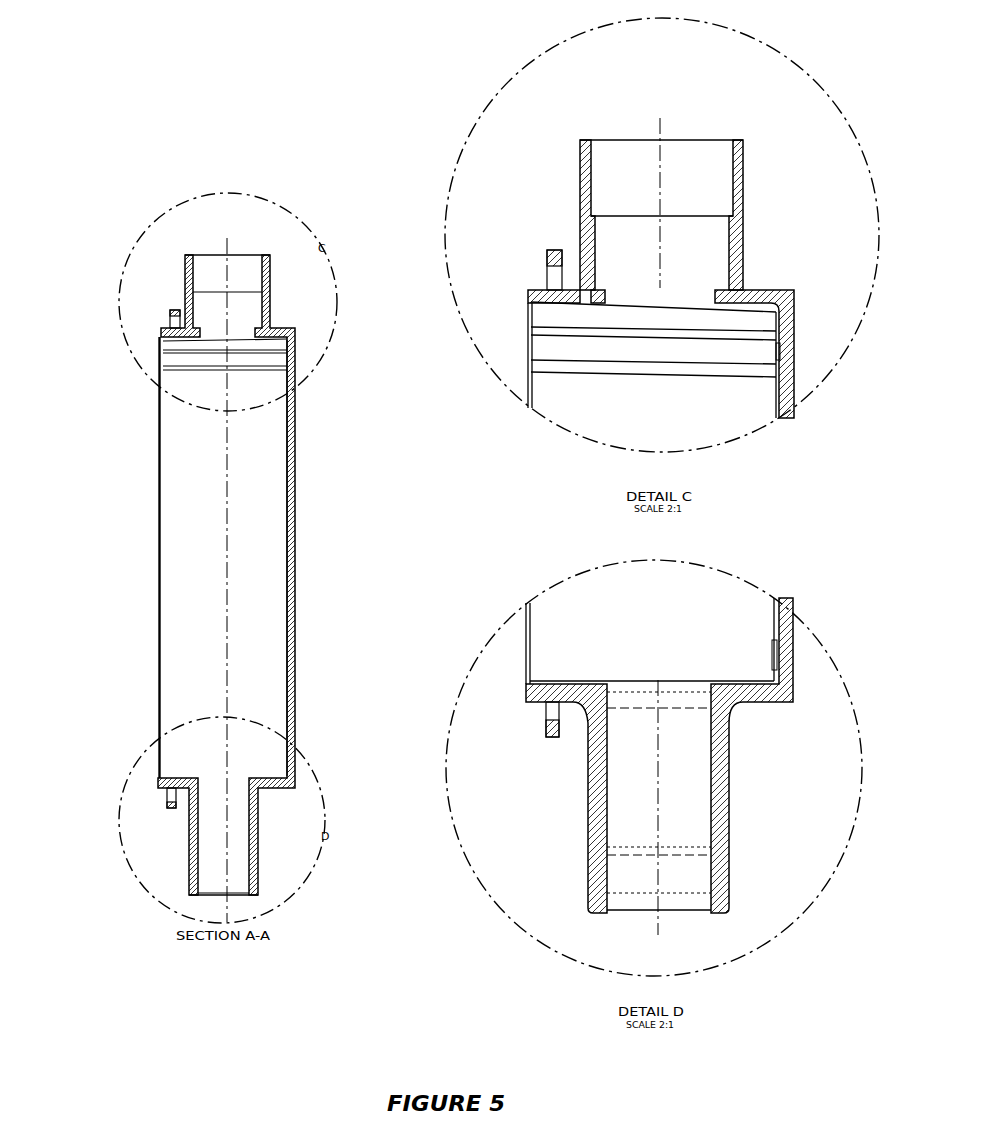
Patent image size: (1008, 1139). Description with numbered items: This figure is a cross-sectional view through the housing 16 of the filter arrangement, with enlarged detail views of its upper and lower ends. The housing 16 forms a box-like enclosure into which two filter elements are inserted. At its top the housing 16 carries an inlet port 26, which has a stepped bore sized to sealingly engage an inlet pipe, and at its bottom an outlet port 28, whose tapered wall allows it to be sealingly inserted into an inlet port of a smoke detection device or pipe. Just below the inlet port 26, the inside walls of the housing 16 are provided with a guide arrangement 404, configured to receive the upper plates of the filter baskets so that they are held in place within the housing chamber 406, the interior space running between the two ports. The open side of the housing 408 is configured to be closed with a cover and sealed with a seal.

The housing 16 is at (158, 643).
The inlet port 26 is at (253, 282).
The outlet port 28 is at (248, 873).
The guide arrangement 404 is at (154, 347).
The housing chamber 406 is at (278, 518).
The open side of the housing 408 is at (159, 483).